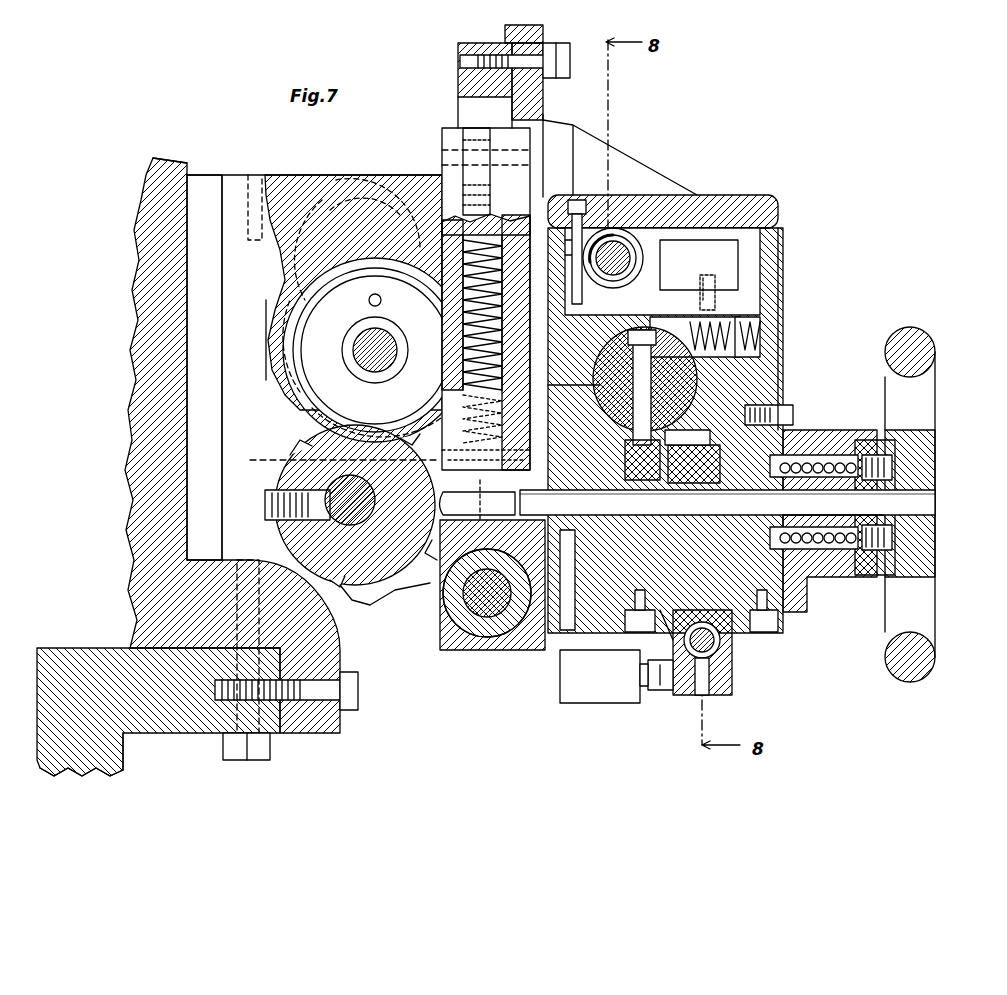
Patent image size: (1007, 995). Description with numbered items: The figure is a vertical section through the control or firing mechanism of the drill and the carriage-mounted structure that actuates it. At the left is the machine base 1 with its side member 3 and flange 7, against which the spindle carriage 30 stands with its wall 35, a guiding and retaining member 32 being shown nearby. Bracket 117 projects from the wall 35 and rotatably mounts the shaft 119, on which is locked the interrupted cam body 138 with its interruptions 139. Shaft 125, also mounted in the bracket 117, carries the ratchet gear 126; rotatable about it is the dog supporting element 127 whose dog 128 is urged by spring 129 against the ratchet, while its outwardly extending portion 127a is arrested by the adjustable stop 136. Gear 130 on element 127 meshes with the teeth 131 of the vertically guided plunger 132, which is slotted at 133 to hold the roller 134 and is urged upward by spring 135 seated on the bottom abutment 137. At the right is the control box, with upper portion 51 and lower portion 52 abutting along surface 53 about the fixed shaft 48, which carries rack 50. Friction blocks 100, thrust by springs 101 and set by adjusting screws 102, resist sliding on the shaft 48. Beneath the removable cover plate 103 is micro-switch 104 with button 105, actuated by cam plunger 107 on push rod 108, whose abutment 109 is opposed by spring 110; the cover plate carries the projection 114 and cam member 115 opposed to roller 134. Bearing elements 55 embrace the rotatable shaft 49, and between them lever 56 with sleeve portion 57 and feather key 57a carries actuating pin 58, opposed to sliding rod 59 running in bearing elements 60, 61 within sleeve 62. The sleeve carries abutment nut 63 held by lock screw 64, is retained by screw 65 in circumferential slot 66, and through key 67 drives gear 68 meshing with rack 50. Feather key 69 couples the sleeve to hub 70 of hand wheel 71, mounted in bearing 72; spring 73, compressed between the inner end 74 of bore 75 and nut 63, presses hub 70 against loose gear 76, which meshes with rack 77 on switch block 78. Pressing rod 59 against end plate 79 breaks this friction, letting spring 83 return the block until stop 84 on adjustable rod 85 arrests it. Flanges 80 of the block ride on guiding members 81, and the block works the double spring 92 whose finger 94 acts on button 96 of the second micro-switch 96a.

The machine base 1 is at (118, 779).
The longitudinal side member 3 is at (123, 762).
The upper outwardly extending flange 7 is at (125, 665).
The spindle carriage 30 is at (168, 149).
The guiding and retaining member 32 is at (218, 712).
The upstanding flange 35 is at (137, 232).
The shaft 48 is at (645, 386).
The shaft 49 is at (470, 605).
The rack 50 is at (686, 420).
The upper portion 51 is at (780, 278).
The lower portion 52 is at (765, 398).
The abutting surface 53 is at (775, 382).
The bearing element 55 is at (462, 640).
The lever 56 is at (545, 545).
The sleeve portion 57 is at (500, 638).
The feather key 57a is at (484, 610).
The actuating pin 58 is at (462, 495).
The sliding pin or rod 59 is at (900, 503).
The bearing element 60 is at (552, 488).
The bearing element 61 is at (900, 520).
The sleeve 62 is at (770, 522).
The abutment nut 63 is at (895, 540).
The lock screw 64 is at (895, 468).
The retaining screw 65 is at (562, 545).
The circumferential slot 66 is at (552, 473).
The key 67 is at (649, 502).
The gear 68 is at (642, 460).
The feather key 69 is at (755, 498).
The hub 70 is at (820, 458).
The hand wheel 71 is at (937, 355).
The bearing 72 is at (830, 580).
The spring 73 is at (835, 545).
The inner end of bore 74 is at (775, 545).
The bore 75 is at (805, 455).
The loose gear 76 is at (694, 464).
The rack 77 is at (690, 570).
The switch block 78 is at (735, 682).
The end plate 79 is at (937, 482).
The upper flange 80 is at (720, 636).
The guiding and supporting member 81 is at (793, 635).
The spring 83 is at (706, 660).
The stop 84 is at (668, 645).
The adjustable rod 85 is at (735, 658).
The double spring 92 is at (670, 692).
The spring finger end 94 is at (658, 690).
The second switch button 96 is at (645, 690).
The second micro-switch 96a is at (572, 700).
The friction block 100 is at (685, 330).
The spring 101 is at (770, 330).
The adjusting screw 102 is at (770, 345).
The removable cover plate 103 is at (764, 198).
The micro-switch 104 is at (706, 281).
The projecting button 105 is at (699, 256).
The cam plunger 107 is at (626, 250).
The push rod 108 is at (604, 240).
The abutment 109 is at (640, 255).
The spring 110 is at (616, 242).
The upward projection 114 is at (546, 40).
The cam member 115 is at (462, 80).
The bracket 117 is at (207, 188).
The shaft 119 is at (310, 540).
The shaft 125 is at (400, 352).
The ratchet gear 126 is at (312, 408).
The dog supporting element 127 is at (300, 392).
The outwardly extending portion 127a is at (322, 200).
The dog 128 is at (362, 180).
The spring 129 is at (336, 180).
The gear 130 is at (292, 337).
The teeth 131 is at (445, 330).
The plunger 132 is at (440, 130).
The slot 133 is at (470, 168).
The roller 134 is at (470, 152).
The spring 135 is at (480, 240).
The adjustable stop 136 is at (262, 175).
The bottom abutment 137 is at (505, 448).
The interrupted cam body 138 is at (375, 595).
The interruption 139 is at (298, 455).